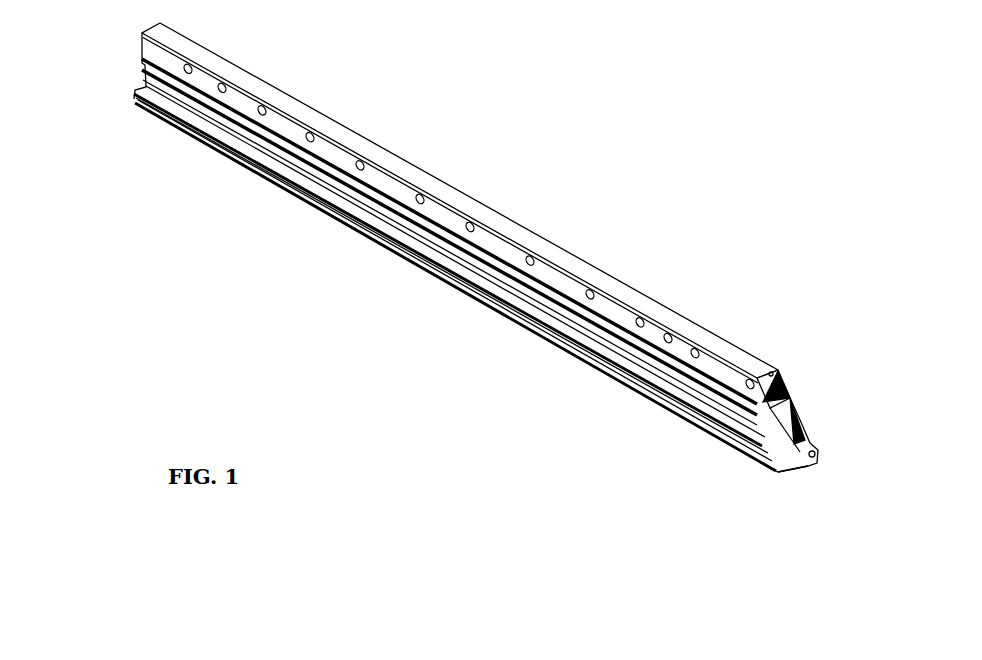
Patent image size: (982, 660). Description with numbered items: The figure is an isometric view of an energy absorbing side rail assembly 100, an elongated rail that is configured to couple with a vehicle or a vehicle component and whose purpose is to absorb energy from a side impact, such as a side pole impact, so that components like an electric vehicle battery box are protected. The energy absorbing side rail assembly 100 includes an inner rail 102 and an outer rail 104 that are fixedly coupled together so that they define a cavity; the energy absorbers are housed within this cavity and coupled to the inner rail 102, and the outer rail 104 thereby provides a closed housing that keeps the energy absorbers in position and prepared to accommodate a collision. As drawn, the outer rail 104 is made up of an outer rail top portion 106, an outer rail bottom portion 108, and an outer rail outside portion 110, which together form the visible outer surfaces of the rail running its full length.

The energy absorbing side rail assembly 100 is at (784, 573).
The inner rail 102 is at (800, 478).
The outer rail 104 is at (133, 58).
The outer rail top portion 106 is at (443, 278).
The outer rail bottom portion 108 is at (812, 432).
The outer rail outside portion 110 is at (612, 266).